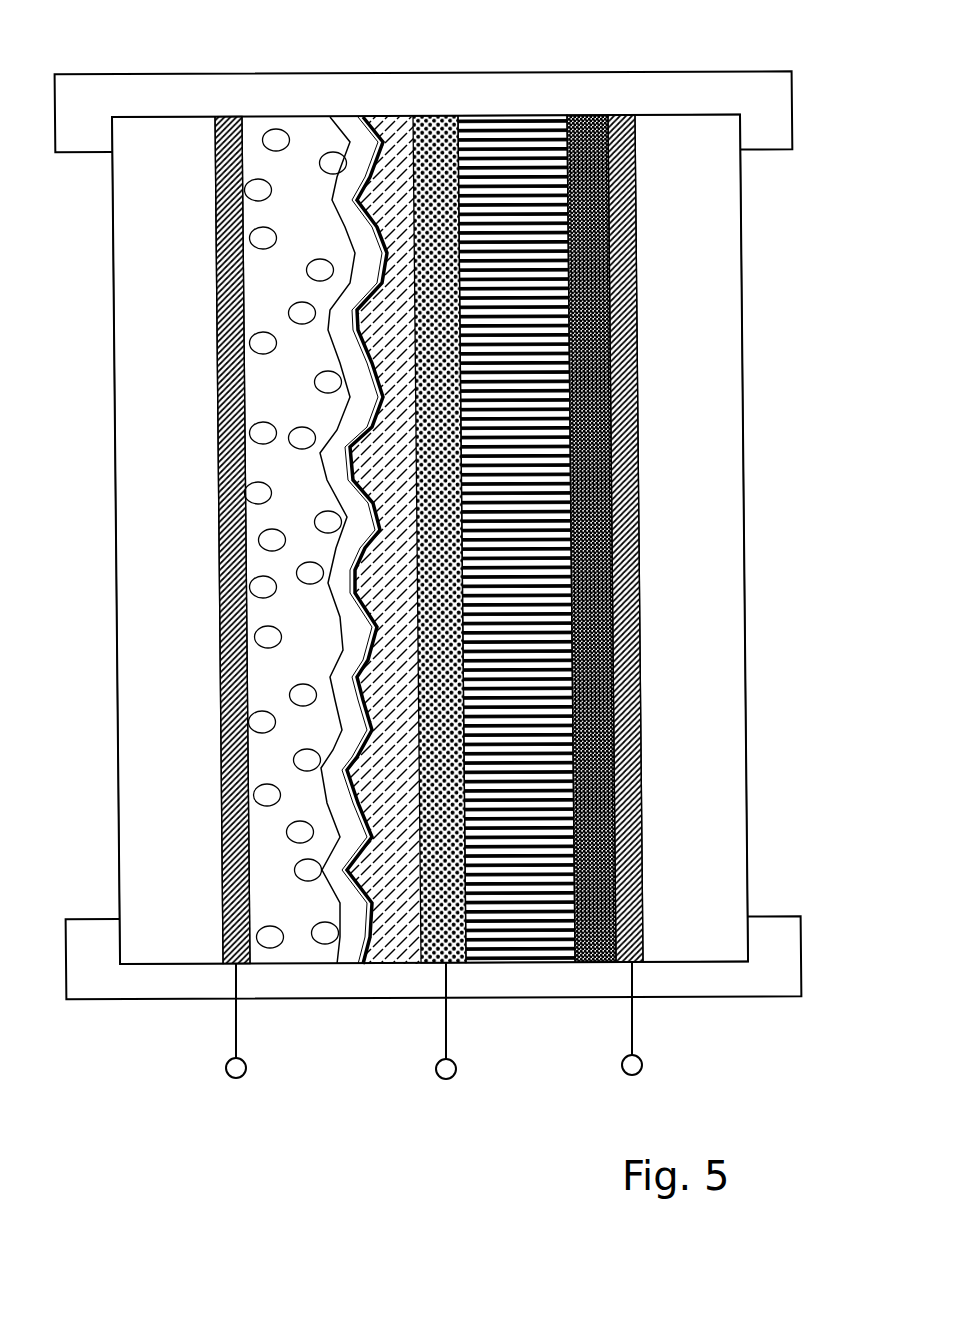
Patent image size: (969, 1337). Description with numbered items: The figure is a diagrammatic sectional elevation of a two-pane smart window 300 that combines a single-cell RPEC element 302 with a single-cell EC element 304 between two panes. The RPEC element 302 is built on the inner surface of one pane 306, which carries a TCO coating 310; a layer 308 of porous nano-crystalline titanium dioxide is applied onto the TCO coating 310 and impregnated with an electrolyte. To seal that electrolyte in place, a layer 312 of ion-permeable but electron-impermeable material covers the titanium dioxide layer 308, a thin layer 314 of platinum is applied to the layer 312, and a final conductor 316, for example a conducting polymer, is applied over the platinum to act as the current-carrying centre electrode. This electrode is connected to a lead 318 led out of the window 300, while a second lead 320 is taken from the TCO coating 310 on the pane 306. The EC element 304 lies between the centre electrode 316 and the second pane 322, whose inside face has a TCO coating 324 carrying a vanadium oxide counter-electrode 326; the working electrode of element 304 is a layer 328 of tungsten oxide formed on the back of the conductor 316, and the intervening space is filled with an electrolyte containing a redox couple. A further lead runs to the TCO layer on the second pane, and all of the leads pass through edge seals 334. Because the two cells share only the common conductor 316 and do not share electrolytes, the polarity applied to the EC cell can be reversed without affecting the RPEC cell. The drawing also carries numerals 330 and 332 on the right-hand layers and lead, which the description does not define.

The two-pane smart window 300 is at (131, 30).
The single-cell RPEC element 302 is at (345, 1040).
The single-cell EC element 304 is at (552, 1020).
The pane 306 is at (175, 267).
The porous nano-crystalline TiO2 layer 308 is at (278, 372).
The TCO coating 310 is at (232, 503).
The ion-permeable, electron-impermeable layer 312 is at (350, 647).
The Pt layer 314 is at (350, 484).
The conductor 316 is at (383, 676).
The lead 318 is at (446, 1028).
The second lead 320 is at (232, 1019).
The second pane 322 is at (710, 803).
The TCO coating 324 is at (617, 302).
The vanadium oxide counter-electrode 326 is at (592, 440).
The tungsten oxide layer 328 is at (433, 167).
The electrochromic layer 330 is at (545, 616).
The lead 332 is at (632, 1026).
The edge seals 334 is at (285, 83).